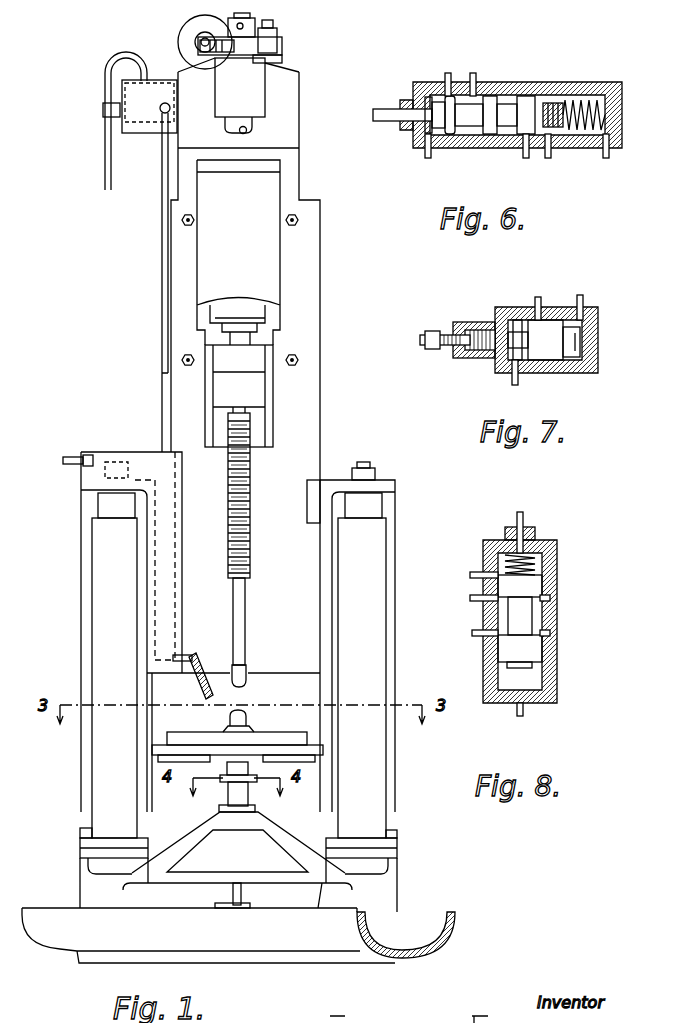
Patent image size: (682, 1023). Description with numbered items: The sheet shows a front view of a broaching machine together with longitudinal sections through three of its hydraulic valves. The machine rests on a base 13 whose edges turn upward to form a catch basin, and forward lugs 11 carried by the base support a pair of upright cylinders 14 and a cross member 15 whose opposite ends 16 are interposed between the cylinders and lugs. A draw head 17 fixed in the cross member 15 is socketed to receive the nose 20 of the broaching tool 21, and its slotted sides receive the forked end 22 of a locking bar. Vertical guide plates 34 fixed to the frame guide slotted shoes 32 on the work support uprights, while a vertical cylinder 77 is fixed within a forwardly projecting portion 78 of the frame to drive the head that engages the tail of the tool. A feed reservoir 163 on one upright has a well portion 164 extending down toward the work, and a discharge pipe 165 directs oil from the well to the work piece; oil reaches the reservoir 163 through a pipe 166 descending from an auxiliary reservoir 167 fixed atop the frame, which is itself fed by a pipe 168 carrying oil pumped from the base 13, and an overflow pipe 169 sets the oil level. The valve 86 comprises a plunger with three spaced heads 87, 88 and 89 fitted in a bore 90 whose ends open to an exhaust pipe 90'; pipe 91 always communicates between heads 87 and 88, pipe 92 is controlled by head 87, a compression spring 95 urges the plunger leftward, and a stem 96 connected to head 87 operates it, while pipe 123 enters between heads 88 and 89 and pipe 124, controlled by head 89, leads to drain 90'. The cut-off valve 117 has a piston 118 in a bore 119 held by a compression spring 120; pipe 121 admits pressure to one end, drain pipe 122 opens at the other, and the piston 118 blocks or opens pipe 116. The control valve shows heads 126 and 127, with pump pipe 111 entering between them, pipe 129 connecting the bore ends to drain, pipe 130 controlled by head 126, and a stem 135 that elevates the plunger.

In FIG. 1, the pipe 168 is at (106, 66).
In FIG. 1, the auxiliary reservoir 167 is at (150, 108).
In FIG. 1, the pipe 166 is at (166, 227).
In FIG. 1, the vertical guide plates 34 is at (302, 318).
In FIG. 1, the forwardly projecting portion 78 is at (262, 237).
In FIG. 1, the vertical cylinder 77 is at (232, 307).
In FIG. 1, the broaching tool 21 is at (240, 472).
In FIG. 1, the slotted shoe 32 is at (317, 500).
In FIG. 1, the upright cylinders 14 is at (365, 640).
In FIG. 1, the feed reservoir 163 is at (143, 463).
In FIG. 1, the overflow pipe 169 is at (77, 462).
In FIG. 1, the well portion 164 is at (163, 560).
In FIG. 1, the discharge pipe 165 is at (192, 656).
In FIG. 1, the nose 20 is at (243, 679).
In FIG. 1, the opposite ends 16 is at (387, 882).
In FIG. 1, the lugs 11 is at (380, 902).
In FIG. 1, the draw head 17 is at (233, 793).
In FIG. 1, the forked end 22 is at (250, 781).
In FIG. 1, the cross member 15 is at (258, 855).
In FIG. 1, the base 13 is at (430, 927).
In FIG. 6, the pipe 92 is at (447, 73).
In FIG. 6, the pipe 91 is at (478, 74).
In FIG. 6, the head 87 is at (430, 97).
In FIG. 6, the head 88 is at (497, 103).
In FIG. 6, the compression spring 95 is at (577, 102).
In FIG. 6, the valve 86 is at (587, 84).
In FIG. 6, the stem 96 is at (383, 112).
In FIG. 6, the exhaust pipe 90' is at (513, 160).
In FIG. 6, the bore 90 is at (463, 140).
In FIG. 6, the pipe 123 is at (525, 150).
In FIG. 6, the pipe 124 is at (547, 156).
In FIG. 6, the head 89 is at (590, 131).
In FIG. 7, the pipe 116 is at (537, 300).
In FIG. 7, the pipe 121 is at (578, 298).
In FIG. 7, the cut-off valve 117 is at (598, 312).
In FIG. 7, the compression spring 120 is at (490, 350).
In FIG. 7, the drain pipe 122 is at (513, 374).
In FIG. 7, the bore 119 is at (517, 362).
In FIG. 7, the piston 118 is at (553, 352).
In FIG. 8, the stem 135 is at (525, 518).
In FIG. 8, the pipe 129 is at (482, 575).
In FIG. 8, the pipe 130 is at (478, 598).
In FIG. 8, the head 126 is at (530, 585).
In FIG. 8, the pipe 111 is at (478, 637).
In FIG. 8, the head 127 is at (530, 650).